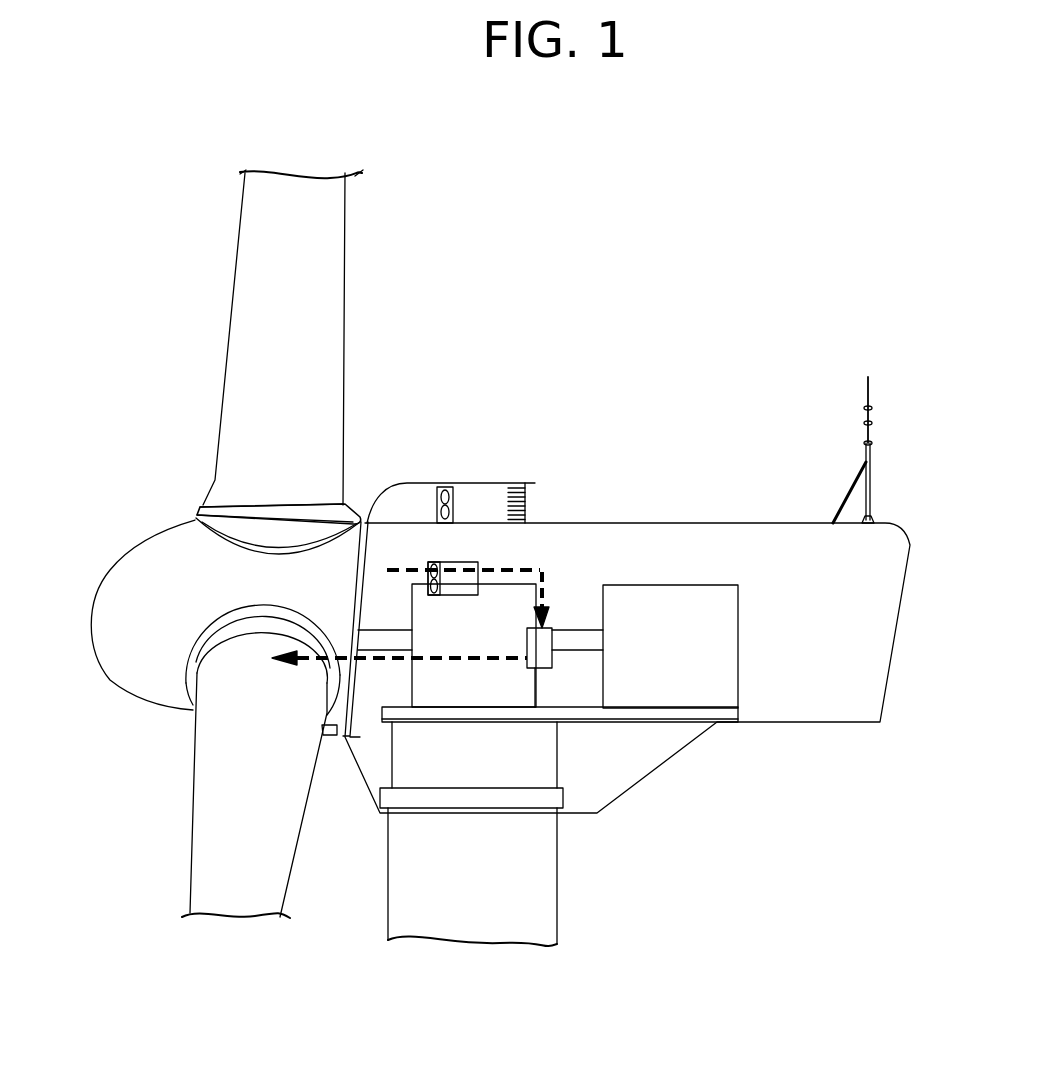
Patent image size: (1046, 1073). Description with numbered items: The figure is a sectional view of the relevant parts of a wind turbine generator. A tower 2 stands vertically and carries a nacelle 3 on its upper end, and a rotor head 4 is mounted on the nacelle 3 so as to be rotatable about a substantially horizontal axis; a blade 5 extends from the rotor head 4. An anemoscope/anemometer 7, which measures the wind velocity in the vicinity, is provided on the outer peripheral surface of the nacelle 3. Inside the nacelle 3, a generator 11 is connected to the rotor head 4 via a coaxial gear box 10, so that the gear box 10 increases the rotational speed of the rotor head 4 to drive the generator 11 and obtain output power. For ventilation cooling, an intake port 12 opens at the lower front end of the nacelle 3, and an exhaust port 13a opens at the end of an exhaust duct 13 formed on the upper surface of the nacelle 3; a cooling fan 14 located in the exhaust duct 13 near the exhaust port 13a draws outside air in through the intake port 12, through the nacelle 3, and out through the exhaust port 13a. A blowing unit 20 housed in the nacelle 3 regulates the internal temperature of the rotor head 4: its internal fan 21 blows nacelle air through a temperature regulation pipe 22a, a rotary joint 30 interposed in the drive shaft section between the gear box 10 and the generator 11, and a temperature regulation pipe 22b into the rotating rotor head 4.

The tower 2 is at (547, 910).
The nacelle 3 is at (762, 388).
The rotor head 4 is at (132, 577).
The blade 5 is at (320, 227).
The anemoscope/anemometer 7 is at (873, 432).
The gear box 10 is at (520, 592).
The generator 11 is at (728, 635).
The intake port 12 is at (365, 780).
The exhaust duct 13 is at (490, 483).
The exhaust port 13a is at (532, 502).
The cooling fan 14 is at (446, 487).
The blowing unit 20 is at (500, 555).
The internal fan 21 is at (440, 567).
The temperature regulation pipe 22a is at (543, 597).
The temperature regulation pipe 22b is at (470, 660).
The rotary joint 30 is at (553, 668).